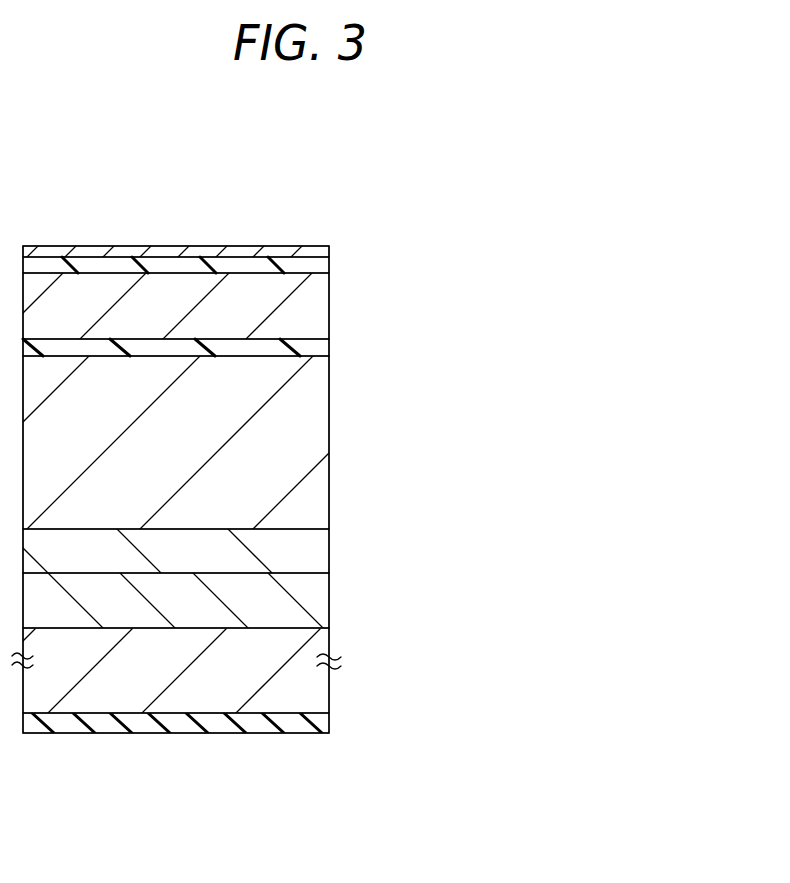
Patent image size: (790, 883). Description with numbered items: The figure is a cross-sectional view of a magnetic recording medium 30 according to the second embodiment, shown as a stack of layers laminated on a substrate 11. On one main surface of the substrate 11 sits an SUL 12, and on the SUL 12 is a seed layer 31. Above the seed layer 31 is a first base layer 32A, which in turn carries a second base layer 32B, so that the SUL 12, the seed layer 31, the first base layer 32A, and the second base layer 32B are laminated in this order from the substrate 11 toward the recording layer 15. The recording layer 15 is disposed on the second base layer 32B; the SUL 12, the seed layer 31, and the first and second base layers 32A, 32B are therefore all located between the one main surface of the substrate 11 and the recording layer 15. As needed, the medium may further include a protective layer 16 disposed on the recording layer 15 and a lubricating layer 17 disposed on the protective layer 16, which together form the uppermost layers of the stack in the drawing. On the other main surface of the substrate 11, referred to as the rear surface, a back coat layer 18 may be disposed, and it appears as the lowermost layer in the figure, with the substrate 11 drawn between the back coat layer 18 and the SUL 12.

The magnetic recording medium 30 is at (302, 166).
The lubricating layer 17 is at (322, 250).
The protective layer 16 is at (320, 265).
The recording layer 15 is at (320, 305).
The second base layer 32B is at (320, 347).
The first base layer 32A is at (320, 443).
The seed layer 31 is at (320, 552).
The SUL 12 is at (320, 602).
The substrate 11 is at (320, 640).
The back coat layer 18 is at (320, 724).